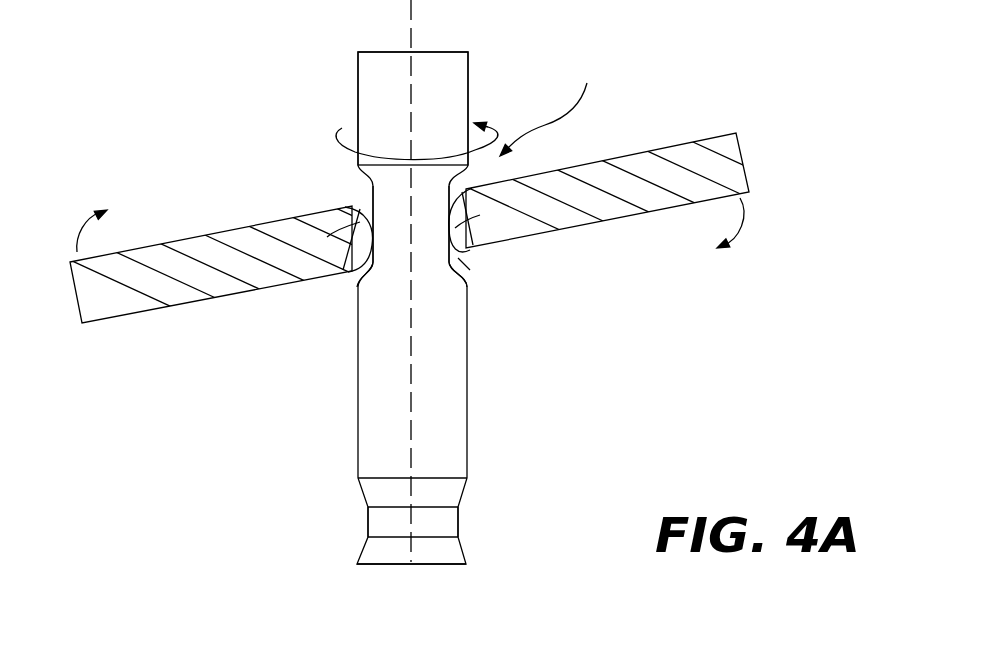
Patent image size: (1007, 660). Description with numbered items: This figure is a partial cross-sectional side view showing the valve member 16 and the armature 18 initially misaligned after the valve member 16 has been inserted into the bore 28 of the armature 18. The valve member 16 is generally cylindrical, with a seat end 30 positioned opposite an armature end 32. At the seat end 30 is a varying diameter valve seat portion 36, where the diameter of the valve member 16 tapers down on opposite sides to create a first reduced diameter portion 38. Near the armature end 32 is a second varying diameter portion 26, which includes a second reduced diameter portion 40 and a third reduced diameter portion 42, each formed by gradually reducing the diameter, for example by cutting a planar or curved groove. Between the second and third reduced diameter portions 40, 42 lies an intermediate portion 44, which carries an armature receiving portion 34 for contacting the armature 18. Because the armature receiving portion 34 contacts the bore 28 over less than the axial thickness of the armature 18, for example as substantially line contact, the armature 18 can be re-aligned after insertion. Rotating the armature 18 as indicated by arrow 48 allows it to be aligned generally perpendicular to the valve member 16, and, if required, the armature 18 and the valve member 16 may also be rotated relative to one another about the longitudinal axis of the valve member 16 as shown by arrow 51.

The valve member 16 is at (428, 391).
The armature 18 is at (623, 162).
The second varying diameter portion 26 is at (550, 104).
The bore 28 is at (458, 258).
The seat end 30 is at (395, 557).
The armature end 32 is at (438, 65).
The armature receiving portion 34 is at (327, 237).
The varying diameter valve seat portion 36 is at (475, 518).
The first reduced diameter portion 38 is at (385, 523).
The second reduced diameter portion 40 is at (358, 273).
The third reduced diameter portion 42 is at (363, 179).
The intermediate portion 44 is at (353, 252).
The arrow 48 is at (410, 225).
The arrow 51 is at (363, 158).